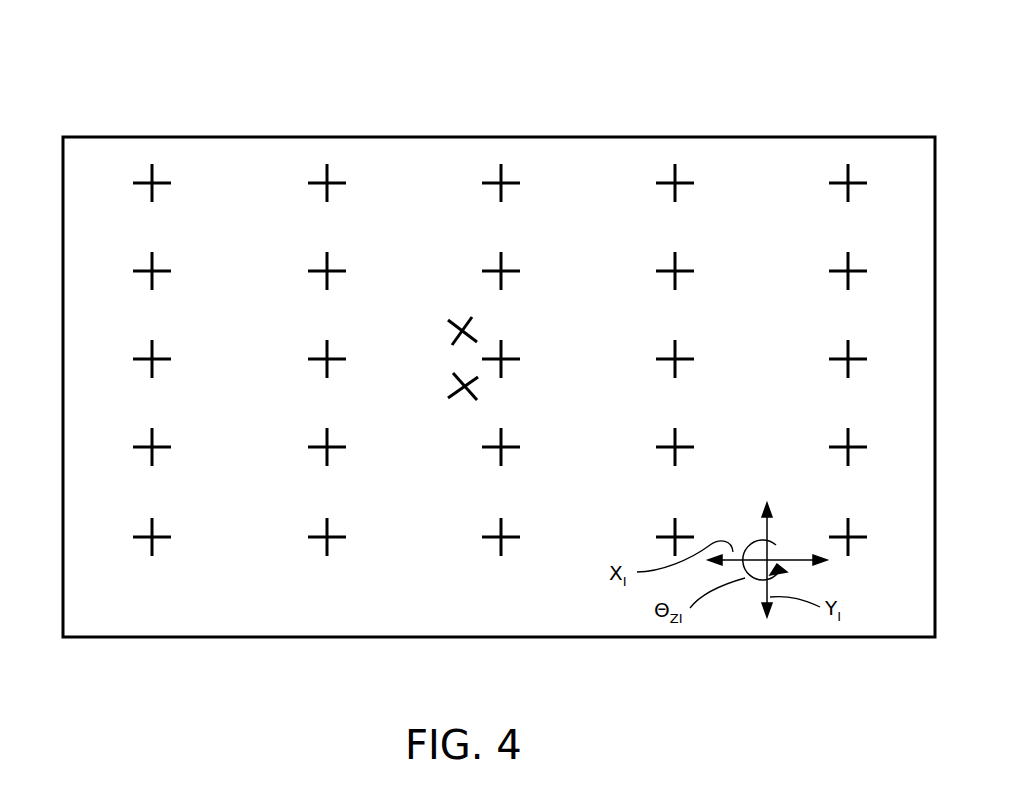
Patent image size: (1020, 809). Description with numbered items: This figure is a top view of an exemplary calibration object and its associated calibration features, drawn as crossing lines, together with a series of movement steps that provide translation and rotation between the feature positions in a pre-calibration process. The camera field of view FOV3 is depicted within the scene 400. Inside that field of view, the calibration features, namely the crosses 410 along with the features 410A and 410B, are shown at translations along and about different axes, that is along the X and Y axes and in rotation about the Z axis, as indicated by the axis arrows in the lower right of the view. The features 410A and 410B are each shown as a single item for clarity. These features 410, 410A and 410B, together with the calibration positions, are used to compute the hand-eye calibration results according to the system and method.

The scene 400 is at (783, 72).
The camera field of view FOV3 is at (535, 137).
The crosses 410 is at (155, 357).
The calibration feature 410A is at (467, 385).
The calibration feature 410B is at (462, 328).